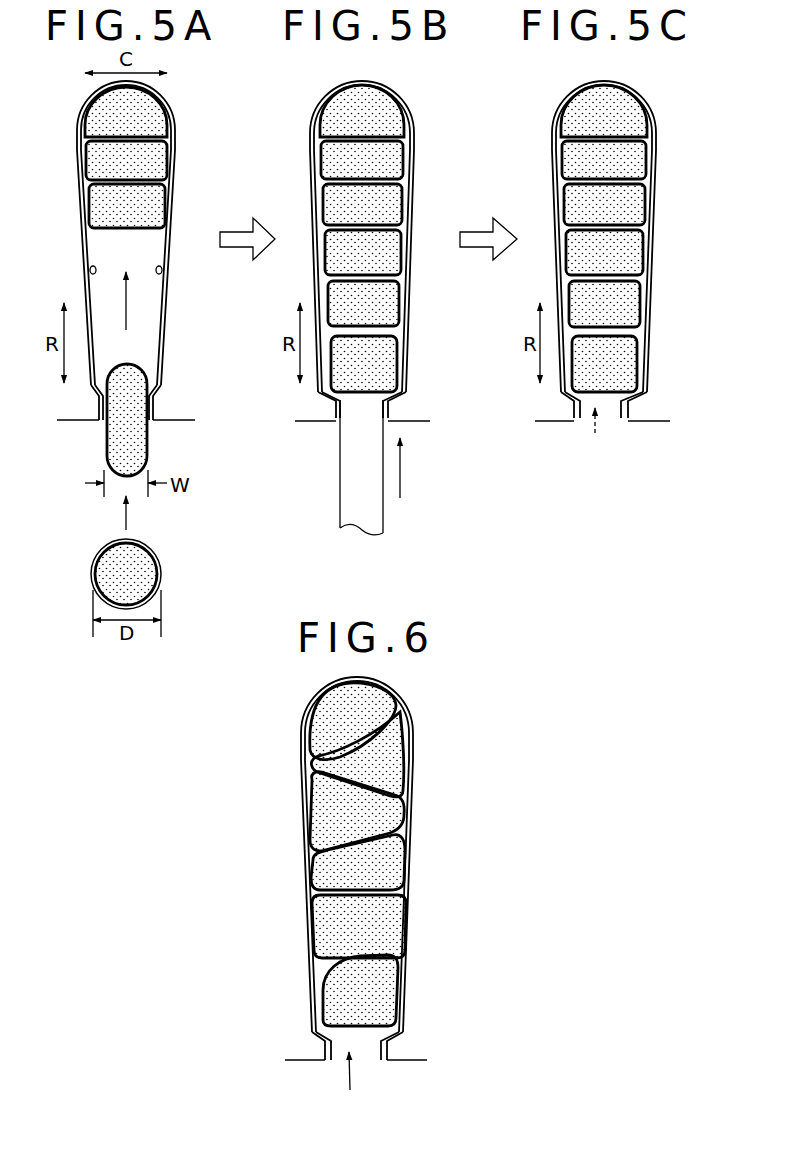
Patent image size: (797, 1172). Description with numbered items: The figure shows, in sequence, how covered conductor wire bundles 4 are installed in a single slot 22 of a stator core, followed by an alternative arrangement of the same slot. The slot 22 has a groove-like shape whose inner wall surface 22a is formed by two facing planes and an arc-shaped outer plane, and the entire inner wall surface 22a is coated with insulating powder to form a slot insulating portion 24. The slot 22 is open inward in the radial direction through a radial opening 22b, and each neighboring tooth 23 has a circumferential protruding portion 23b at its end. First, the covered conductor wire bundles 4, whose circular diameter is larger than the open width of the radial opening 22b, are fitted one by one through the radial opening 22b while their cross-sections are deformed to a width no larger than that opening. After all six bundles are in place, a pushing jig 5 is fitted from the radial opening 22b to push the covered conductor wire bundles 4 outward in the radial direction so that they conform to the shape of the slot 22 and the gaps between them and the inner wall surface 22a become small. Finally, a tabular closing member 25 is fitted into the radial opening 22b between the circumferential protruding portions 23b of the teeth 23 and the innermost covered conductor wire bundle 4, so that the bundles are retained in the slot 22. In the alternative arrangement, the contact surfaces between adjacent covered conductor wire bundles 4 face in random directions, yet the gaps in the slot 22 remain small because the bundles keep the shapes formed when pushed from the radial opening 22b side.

In FIG. 5A, the covered conductor wire bundle 4 is at (155, 155).
In FIG. 5B, the covered conductor wire bundle 4 is at (330, 156).
In FIG. 5C, the covered conductor wire bundle 4 is at (575, 160).
In FIG. 6, the covered conductor wire bundle 4 is at (392, 750).
In FIG. 5B, the pushing jig 5 is at (340, 470).
In FIG. 5A, the slot 22 is at (108, 305).
In FIG. 5B, the slot 22 is at (385, 210).
In FIG. 5C, the slot 22 is at (628, 210).
In FIG. 6, the slot 22 is at (335, 820).
In FIG. 5A, the inner wall surface 22a is at (90, 268).
In FIG. 5A, the radial opening 22b is at (152, 418).
In FIG. 5C, the radial opening 22b is at (597, 444).
In FIG. 6, the radial opening 22b is at (356, 1086).
In FIG. 5C, the tooth 23 is at (654, 410).
In FIG. 6, the tooth 23 is at (420, 1055).
In FIG. 5C, the circumferential protruding portion 23b is at (574, 412).
In FIG. 6, the circumferential protruding portion 23b is at (322, 1055).
In FIG. 5A, the slot insulating portion 24 is at (166, 340).
In FIG. 5B, the slot insulating portion 24 is at (404, 273).
In FIG. 5C, the slot insulating portion 24 is at (556, 222).
In FIG. 6, the slot insulating portion 24 is at (410, 876).
In FIG. 5C, the closing member 25 is at (605, 402).
In FIG. 6, the closing member 25 is at (372, 1035).